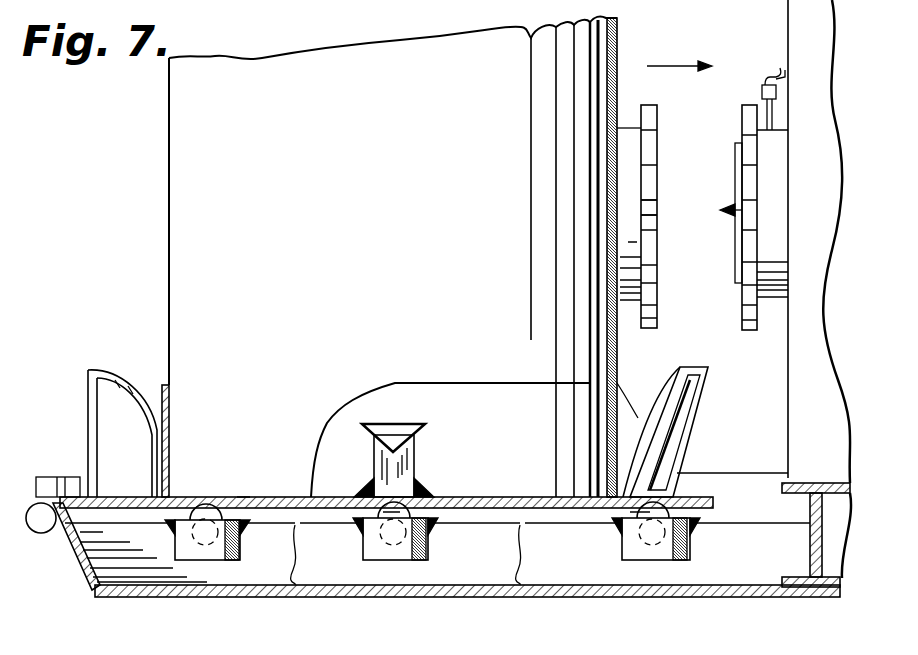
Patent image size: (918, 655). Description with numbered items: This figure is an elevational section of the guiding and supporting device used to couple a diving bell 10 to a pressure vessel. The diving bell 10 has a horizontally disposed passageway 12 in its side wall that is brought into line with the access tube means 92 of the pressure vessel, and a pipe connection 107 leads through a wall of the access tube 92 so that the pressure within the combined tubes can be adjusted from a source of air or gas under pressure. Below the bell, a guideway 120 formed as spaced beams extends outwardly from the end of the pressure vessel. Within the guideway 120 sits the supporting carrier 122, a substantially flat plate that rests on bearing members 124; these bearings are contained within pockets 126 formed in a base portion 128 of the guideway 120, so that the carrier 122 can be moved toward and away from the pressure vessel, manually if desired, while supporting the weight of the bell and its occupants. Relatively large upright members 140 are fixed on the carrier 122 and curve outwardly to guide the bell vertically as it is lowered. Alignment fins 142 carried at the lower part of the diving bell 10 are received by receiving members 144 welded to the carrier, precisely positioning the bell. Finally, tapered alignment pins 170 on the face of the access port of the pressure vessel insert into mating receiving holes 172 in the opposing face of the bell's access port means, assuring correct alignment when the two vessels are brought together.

The diving bell 10 is at (428, 307).
The passageway 12 is at (661, 112).
The access tube means 92 is at (735, 122).
The pipe connection 107 is at (766, 89).
The guideway 120 is at (70, 586).
The supporting carrier 122 is at (500, 497).
The bearing members 124 is at (233, 497).
The pockets 126 is at (240, 557).
The base portion 128 is at (412, 580).
The upright members 140 is at (140, 352).
The alignment fins 142 is at (403, 430).
The receiving members 144 is at (412, 460).
The alignment pins 170 is at (723, 216).
The receiving holes 172 is at (644, 204).